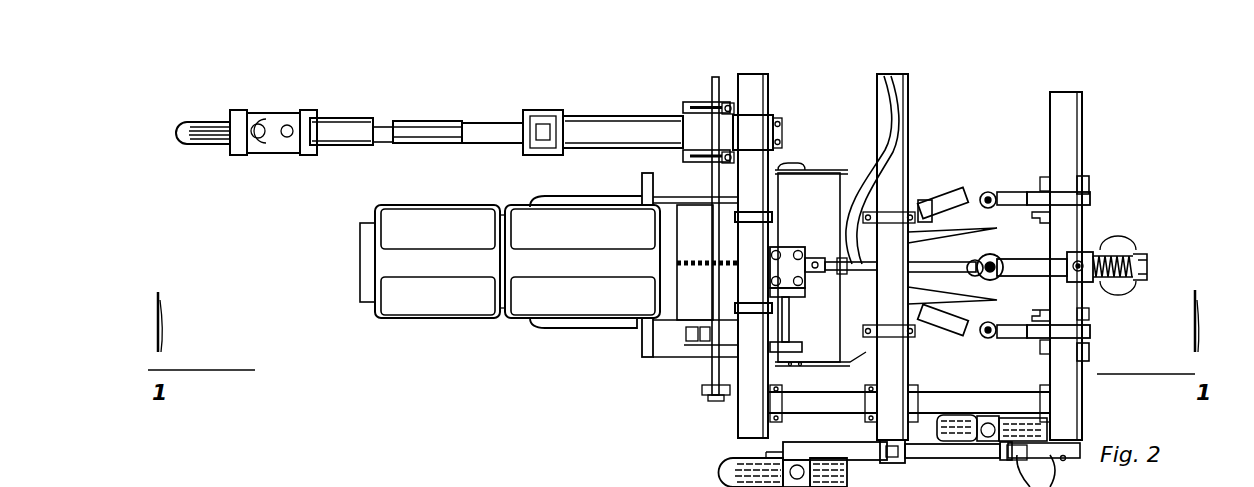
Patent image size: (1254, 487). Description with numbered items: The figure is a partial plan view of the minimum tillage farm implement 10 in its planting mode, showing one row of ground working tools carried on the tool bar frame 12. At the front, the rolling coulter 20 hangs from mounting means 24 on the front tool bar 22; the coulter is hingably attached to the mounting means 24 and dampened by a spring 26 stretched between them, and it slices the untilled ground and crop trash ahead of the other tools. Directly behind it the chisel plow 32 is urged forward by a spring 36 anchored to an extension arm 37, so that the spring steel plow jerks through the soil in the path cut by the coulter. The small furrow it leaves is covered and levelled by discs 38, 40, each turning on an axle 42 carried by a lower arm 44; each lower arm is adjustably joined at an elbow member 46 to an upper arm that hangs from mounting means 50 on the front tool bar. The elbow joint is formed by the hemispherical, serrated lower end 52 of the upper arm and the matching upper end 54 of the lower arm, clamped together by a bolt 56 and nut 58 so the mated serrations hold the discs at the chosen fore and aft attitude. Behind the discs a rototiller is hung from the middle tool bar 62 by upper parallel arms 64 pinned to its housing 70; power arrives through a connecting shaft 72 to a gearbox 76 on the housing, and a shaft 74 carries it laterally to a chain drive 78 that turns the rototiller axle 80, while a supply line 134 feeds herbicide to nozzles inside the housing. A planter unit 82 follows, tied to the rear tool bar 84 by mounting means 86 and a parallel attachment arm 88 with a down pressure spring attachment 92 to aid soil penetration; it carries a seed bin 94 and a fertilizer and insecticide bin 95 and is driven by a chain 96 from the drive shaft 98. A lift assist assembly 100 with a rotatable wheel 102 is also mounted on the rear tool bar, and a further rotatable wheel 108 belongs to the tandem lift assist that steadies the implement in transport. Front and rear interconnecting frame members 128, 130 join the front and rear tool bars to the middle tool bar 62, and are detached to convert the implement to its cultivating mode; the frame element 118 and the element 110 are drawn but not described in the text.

The minimum tillage farm implement 10 is at (1132, 82).
The tool bar frame 12 is at (1089, 132).
The rolling coulter 20 is at (1113, 246).
The front tool bar 22 is at (1060, 92).
The mounting means 24 is at (1110, 240).
The spring 26 is at (1130, 252).
The chisel plow 32 is at (973, 265).
The spring 36 is at (998, 255).
The extension arm 37 is at (1082, 283).
The disc 38 is at (976, 298).
The disc 40 is at (962, 184).
The axle 42 is at (963, 192).
The lower arm 44 is at (950, 302).
The elbow member 46 is at (979, 178).
The mounting means 50 is at (1050, 178).
The lower end of upper arm 52 is at (990, 192).
The upper end of lower arm 54 is at (998, 194).
The bolt 56 is at (985, 224).
The nut 58 is at (980, 170).
The middle tool bar 62 is at (910, 93).
The upper parallel arm 64 is at (833, 170).
The housing 70 is at (860, 163).
The connecting shaft 72 is at (858, 245).
The shaft 74 is at (790, 332).
The gearbox 76 is at (790, 247).
The chain drive 78 is at (795, 355).
The axle 80 is at (813, 230).
The planter unit 82 is at (562, 332).
The rear tool bar 84 is at (738, 432).
The mounting means 86 is at (722, 188).
The parallel attachment arm 88 is at (690, 202).
The down pressure spring attachment 92 is at (686, 343).
The bin 94 is at (612, 318).
The bin 95 is at (500, 318).
The chain 96 is at (688, 270).
The drive shaft 98 is at (716, 95).
The lift assist assembly 100 is at (338, 152).
The rotatable wheel 102 is at (221, 146).
The rotatable wheel 108 is at (1020, 462).
The roller 110 is at (1148, 484).
The frame 118 is at (540, 200).
The front interconnecting frame member 128 is at (979, 413).
The rear interconnecting frame member 130 is at (822, 403).
The supply line 134 is at (878, 90).